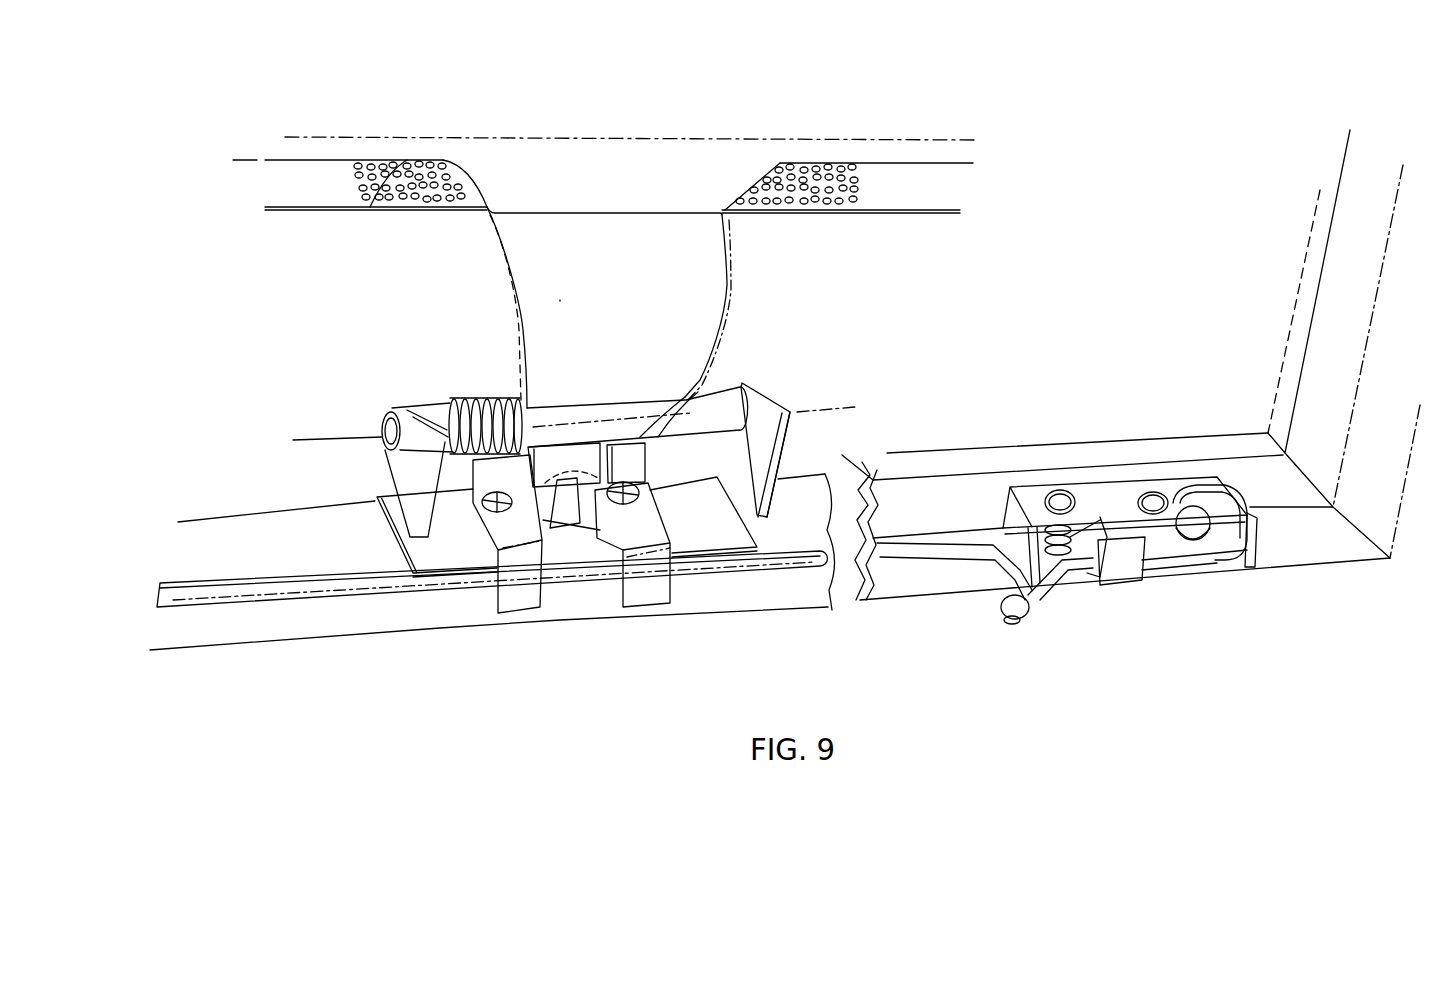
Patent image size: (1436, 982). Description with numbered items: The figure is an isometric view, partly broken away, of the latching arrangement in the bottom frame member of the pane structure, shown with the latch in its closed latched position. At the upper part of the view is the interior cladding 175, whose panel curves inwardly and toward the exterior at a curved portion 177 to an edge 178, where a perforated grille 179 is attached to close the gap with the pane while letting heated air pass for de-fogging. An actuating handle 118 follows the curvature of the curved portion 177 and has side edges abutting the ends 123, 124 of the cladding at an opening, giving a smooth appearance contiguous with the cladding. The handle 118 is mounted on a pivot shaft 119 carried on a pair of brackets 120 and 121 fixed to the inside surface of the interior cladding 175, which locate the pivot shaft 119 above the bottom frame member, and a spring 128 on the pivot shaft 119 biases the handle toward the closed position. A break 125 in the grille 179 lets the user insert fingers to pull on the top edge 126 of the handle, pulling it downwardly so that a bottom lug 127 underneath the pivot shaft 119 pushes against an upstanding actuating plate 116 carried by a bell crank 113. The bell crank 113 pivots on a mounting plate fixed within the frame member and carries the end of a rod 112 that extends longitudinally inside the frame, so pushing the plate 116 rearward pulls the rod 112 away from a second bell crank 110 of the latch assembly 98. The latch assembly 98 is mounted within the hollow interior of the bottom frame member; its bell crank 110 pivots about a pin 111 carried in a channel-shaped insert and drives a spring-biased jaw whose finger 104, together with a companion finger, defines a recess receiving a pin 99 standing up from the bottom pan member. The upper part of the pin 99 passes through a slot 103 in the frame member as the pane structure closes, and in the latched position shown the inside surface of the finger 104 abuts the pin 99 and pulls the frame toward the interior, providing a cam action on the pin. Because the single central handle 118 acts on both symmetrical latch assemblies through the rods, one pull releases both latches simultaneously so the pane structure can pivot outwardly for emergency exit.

The latch assembly 98 is at (1107, 546).
The pin 99 is at (1205, 540).
The slot 103 is at (1253, 567).
The finger 104 is at (1203, 540).
The bell crank 110 is at (1037, 580).
The pin 111 is at (1060, 500).
The rod 112 is at (895, 553).
The bell crank 113 is at (517, 607).
The actuating plate 116 is at (633, 470).
The actuating handle 118 is at (637, 230).
The pivot shaft 119 is at (722, 392).
The bracket 120 is at (775, 395).
The bracket 121 is at (413, 408).
The end of the cladding 123 is at (520, 300).
The end of the cladding 124 is at (727, 283).
The break 125 is at (730, 187).
The top edge 126 is at (559, 217).
The bottom lug 127 is at (573, 460).
The spring 128 is at (480, 398).
The interior cladding 175 is at (308, 452).
The curved portion 177 is at (450, 263).
The edge 178 is at (396, 182).
The perforated grille 179 is at (340, 180).